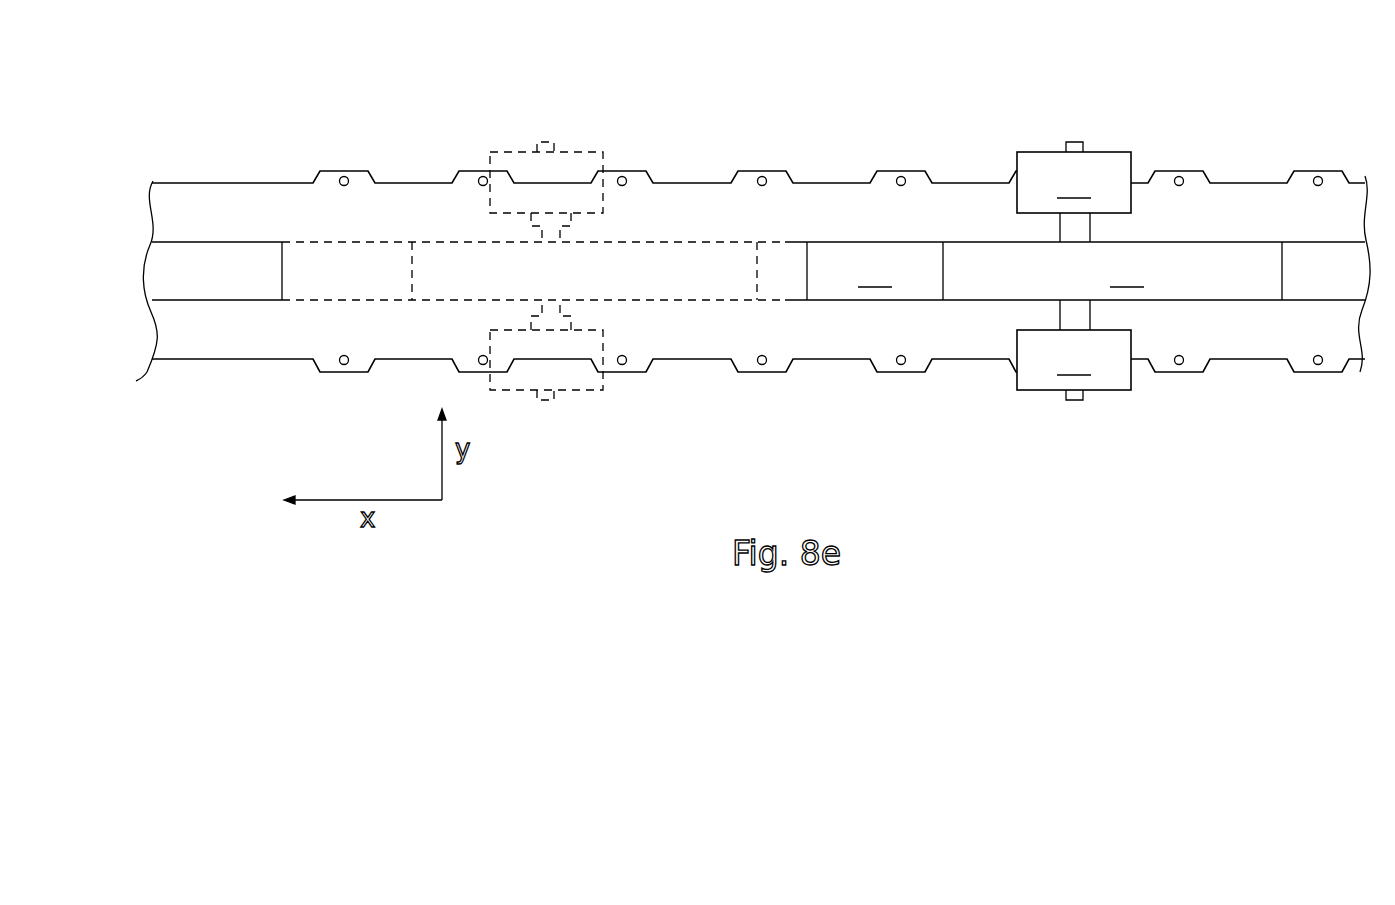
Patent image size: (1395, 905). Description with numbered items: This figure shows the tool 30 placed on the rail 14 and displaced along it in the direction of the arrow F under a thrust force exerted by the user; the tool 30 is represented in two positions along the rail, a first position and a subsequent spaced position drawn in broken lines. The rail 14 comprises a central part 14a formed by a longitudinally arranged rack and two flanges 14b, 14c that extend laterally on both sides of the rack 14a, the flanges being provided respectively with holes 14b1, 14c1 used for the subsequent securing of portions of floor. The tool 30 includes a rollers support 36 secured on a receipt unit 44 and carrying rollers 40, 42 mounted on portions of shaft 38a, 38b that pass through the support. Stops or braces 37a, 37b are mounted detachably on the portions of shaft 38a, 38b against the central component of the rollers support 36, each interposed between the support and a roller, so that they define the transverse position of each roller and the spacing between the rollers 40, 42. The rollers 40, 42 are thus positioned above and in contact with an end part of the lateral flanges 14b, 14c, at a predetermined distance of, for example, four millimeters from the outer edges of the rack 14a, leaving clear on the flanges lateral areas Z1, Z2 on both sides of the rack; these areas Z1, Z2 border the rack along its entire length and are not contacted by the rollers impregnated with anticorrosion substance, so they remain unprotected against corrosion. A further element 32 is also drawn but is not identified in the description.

The rail 14 is at (885, 184).
The central part 14a is at (1302, 225).
The flange 14b is at (990, 345).
The holes 14b1 is at (904, 366).
The flange 14c is at (993, 205).
The holes 14c1 is at (902, 176).
The tool 30 is at (470, 156).
The guide rail 32 is at (1235, 220).
The rollers support 36 is at (758, 271).
The stop 37a is at (1068, 312).
The stop 37b is at (1068, 228).
The portion of shaft 38a is at (1075, 400).
The portion of shaft 38b is at (1075, 141).
The roller 40 is at (1074, 360).
The roller 42 is at (1074, 182).
The receipt unit 44 is at (875, 271).
The lateral area Z1 is at (1133, 323).
The lateral area Z2 is at (1135, 216).
The arrow F is at (716, 100).